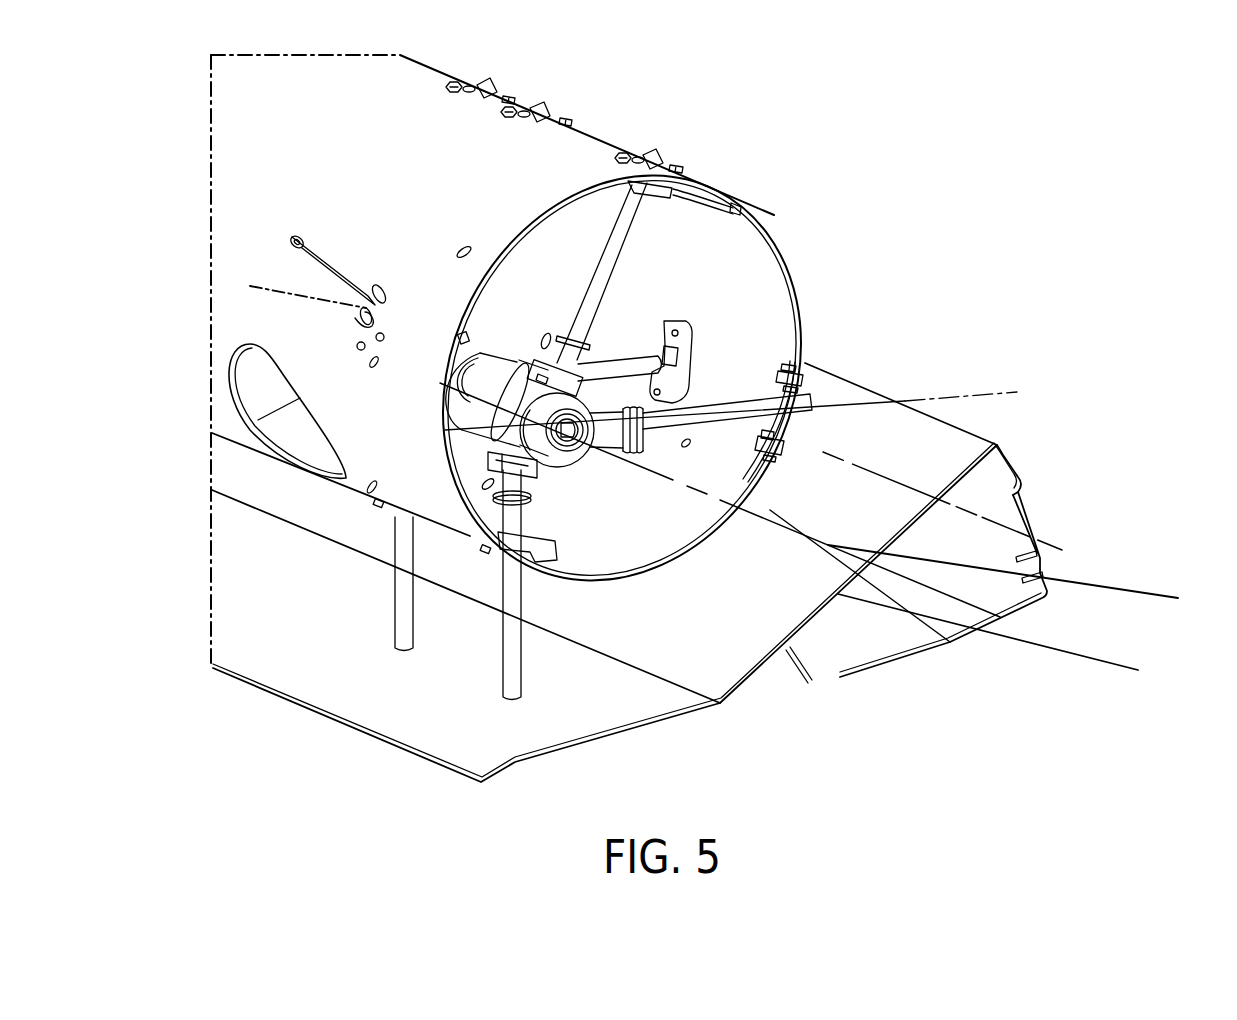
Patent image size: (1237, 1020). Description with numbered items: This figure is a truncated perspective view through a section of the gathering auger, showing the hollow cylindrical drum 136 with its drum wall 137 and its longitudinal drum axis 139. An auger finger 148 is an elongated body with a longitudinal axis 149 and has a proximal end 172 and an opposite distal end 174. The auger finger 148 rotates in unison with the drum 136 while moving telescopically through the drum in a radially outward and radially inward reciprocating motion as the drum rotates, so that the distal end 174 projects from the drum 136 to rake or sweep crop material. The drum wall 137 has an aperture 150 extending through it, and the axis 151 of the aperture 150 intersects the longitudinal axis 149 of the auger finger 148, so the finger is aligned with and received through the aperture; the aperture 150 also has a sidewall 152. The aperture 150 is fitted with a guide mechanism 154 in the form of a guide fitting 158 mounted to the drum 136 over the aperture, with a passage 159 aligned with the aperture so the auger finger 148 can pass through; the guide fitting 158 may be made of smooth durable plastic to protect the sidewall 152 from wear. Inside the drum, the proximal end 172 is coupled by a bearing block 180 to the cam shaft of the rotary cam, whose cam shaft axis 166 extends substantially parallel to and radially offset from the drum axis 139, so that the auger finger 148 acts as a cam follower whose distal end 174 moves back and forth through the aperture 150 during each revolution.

The drum 136 is at (406, 171).
The drum wall 137 is at (790, 270).
The drum axis 139 is at (1124, 574).
The auger finger 148 is at (633, 245).
The longitudinal axis 149 is at (915, 391).
The aperture 150 is at (382, 296).
The axis 151 is at (250, 286).
The sidewall 152 is at (372, 290).
The guide mechanism 154 is at (759, 449).
The guide fitting 158 is at (790, 370).
The passage 159 is at (362, 320).
The cam shaft axis 166 is at (1124, 664).
The proximal end 172 is at (577, 470).
The distal end 174 is at (655, 155).
The bearing block 180 is at (557, 470).